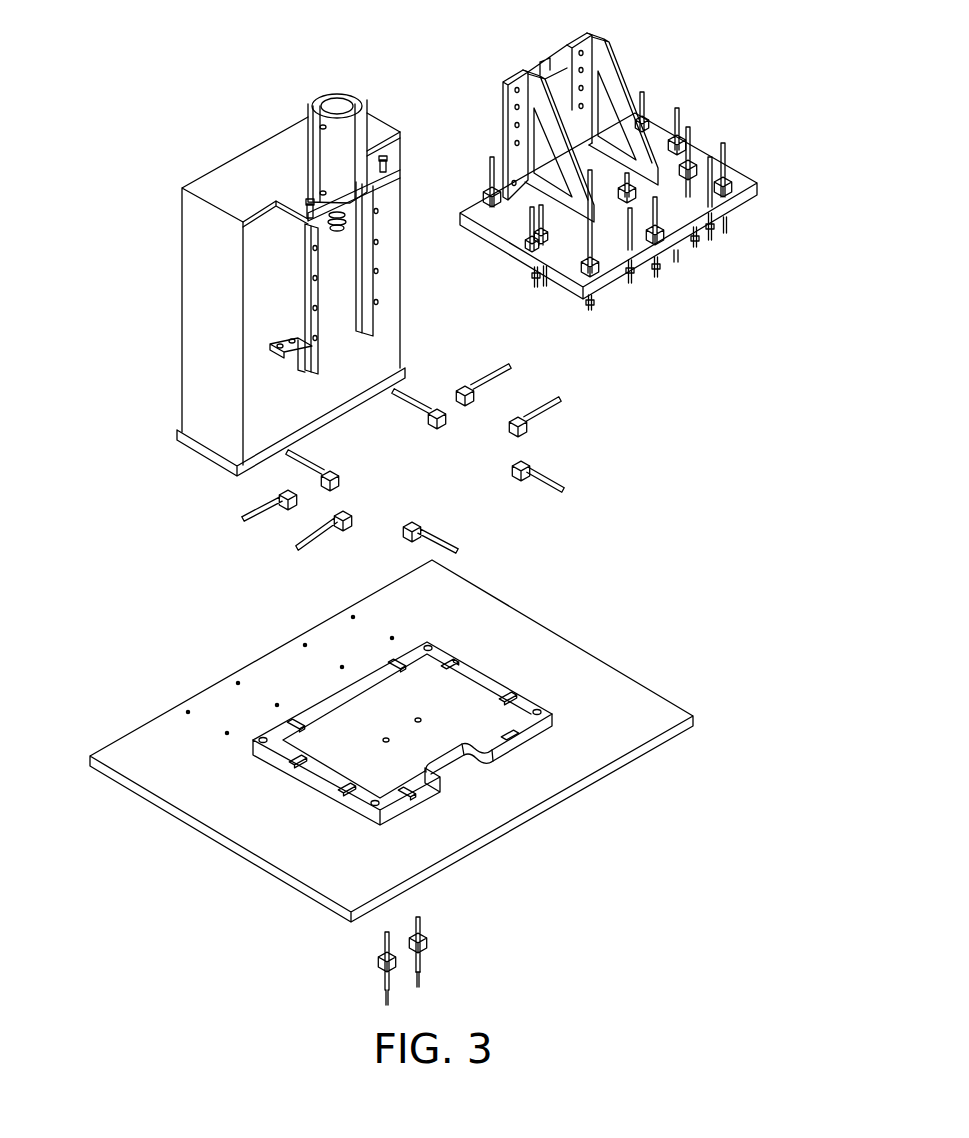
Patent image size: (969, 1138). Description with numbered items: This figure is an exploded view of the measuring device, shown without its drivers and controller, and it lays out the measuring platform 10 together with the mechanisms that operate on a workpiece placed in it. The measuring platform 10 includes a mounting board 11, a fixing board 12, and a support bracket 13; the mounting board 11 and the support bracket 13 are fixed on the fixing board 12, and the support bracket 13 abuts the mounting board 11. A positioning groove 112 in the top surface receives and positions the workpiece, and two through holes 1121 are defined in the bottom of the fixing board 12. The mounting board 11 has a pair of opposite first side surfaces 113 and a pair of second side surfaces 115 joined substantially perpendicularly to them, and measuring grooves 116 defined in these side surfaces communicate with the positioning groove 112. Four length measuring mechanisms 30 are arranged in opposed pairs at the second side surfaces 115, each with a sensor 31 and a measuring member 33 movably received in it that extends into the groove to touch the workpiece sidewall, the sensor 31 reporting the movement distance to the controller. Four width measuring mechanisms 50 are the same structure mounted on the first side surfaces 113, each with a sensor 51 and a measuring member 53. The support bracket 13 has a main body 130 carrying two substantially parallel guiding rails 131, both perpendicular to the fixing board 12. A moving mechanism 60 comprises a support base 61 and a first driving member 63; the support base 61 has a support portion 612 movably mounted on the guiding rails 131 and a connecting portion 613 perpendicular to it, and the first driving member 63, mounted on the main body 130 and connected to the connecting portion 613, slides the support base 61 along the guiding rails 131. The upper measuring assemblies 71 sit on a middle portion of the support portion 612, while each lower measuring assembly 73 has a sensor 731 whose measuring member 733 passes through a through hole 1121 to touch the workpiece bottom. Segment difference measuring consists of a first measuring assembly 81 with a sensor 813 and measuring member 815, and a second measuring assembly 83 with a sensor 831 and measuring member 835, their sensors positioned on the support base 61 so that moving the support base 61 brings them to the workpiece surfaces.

The measuring platform 10 is at (146, 505).
The mounting board 11 is at (421, 722).
The fixing board 12 is at (283, 668).
The support bracket 13 is at (232, 441).
The length measuring mechanism 30 is at (493, 353).
The sensor 31 is at (460, 393).
The measuring member 33 is at (508, 376).
The width measuring mechanism 50 is at (551, 483).
The sensor 51 is at (556, 494).
The measuring member 53 is at (518, 458).
The moving mechanism 60 is at (732, 33).
The support base 61 is at (647, 20).
The first driving member 63 is at (335, 108).
The upper measuring assembly 71 is at (680, 135).
The lower measuring assembly 73 is at (456, 952).
The first measuring assembly 81 is at (680, 320).
The second measuring assembly 83 is at (740, 244).
The positioning groove 112 is at (450, 726).
The first side surface 113 is at (505, 750).
The second side surface 115 is at (530, 700).
The measuring groove 116 is at (412, 792).
The main body 130 is at (247, 410).
The guiding rail 131 is at (314, 295).
The support portion 612 is at (655, 138).
The connecting portion 613 is at (617, 83).
The sensor 731 is at (419, 984).
The measuring member 733 is at (423, 915).
The sensor 813 is at (663, 222).
The measuring member 815 is at (663, 268).
The sensor 831 is at (697, 187).
The measuring member 835 is at (705, 240).
The through hole 1121 is at (384, 744).